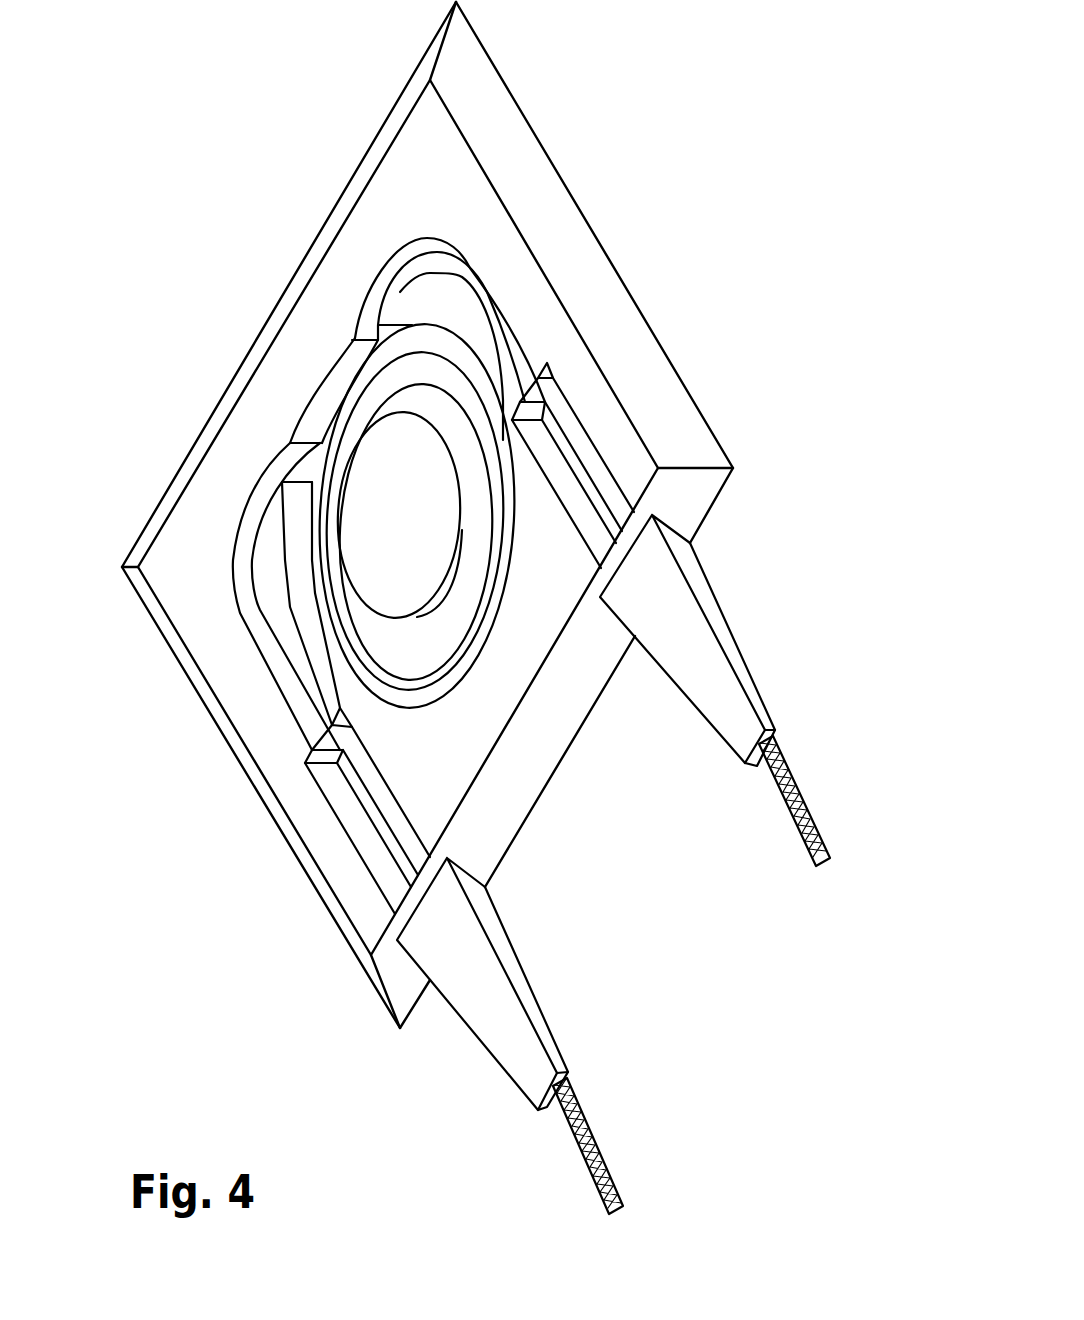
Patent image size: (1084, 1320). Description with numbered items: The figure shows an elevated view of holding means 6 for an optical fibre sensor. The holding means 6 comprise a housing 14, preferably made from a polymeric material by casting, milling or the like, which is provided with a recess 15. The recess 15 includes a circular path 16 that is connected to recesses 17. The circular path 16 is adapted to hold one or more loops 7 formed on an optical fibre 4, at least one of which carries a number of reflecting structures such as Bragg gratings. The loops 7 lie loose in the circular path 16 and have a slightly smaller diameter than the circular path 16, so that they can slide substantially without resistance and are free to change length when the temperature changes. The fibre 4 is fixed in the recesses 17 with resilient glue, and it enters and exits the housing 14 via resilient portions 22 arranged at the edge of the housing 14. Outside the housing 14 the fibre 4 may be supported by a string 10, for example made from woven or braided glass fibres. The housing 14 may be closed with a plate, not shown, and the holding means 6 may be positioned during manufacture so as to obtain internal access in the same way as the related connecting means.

The holding means 6 is at (250, 128).
The housing 14 is at (535, 197).
The recess 15 is at (243, 553).
The circular path 16 is at (317, 527).
The recesses 17 is at (568, 417).
The resilient portions 22 is at (723, 618).
The string 10 is at (802, 787).
The optical fibre 4 is at (830, 860).
The loops 7 is at (433, 700).